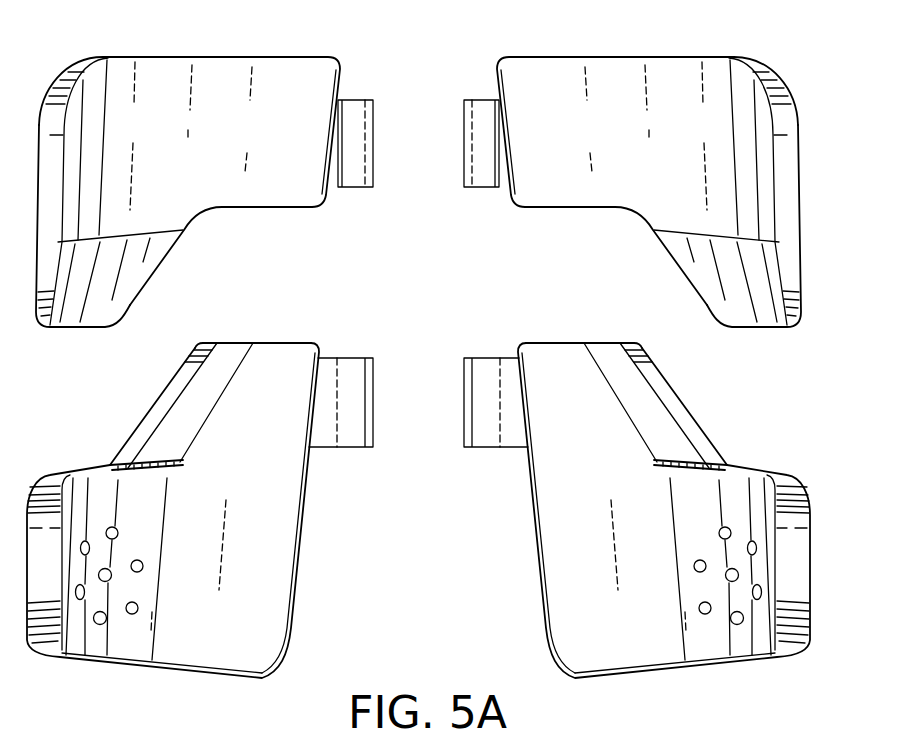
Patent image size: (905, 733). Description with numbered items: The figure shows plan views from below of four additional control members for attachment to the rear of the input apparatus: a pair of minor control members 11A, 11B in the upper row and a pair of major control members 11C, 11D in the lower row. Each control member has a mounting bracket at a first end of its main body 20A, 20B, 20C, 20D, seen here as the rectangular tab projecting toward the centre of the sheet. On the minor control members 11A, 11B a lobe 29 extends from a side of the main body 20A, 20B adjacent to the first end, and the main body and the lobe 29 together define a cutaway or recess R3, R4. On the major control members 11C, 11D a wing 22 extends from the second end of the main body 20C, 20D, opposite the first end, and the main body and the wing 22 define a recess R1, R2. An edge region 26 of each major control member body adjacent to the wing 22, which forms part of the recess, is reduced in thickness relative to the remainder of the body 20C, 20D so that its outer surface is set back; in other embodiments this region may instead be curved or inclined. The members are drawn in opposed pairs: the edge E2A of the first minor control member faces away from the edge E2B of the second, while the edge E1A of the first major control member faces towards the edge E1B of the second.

The minor control member 11A is at (116, 80).
The minor control member 11B is at (729, 76).
The major control member 11C is at (323, 565).
The major control member 11D is at (768, 454).
The main body 20A is at (296, 143).
The main body 20B is at (603, 137).
The main body 20C is at (258, 620).
The main body 20D is at (656, 620).
The wing 22 is at (493, 720).
The edge region 26 is at (228, 362).
The lobe 29 is at (133, 268).
The edge E1A is at (277, 343).
The edge E1B is at (537, 343).
The edge E2A is at (291, 208).
The edge E2B is at (546, 208).
The recess R1 is at (745, 407).
The recess R2 is at (93, 437).
The recess R3 is at (256, 252).
The recess R4 is at (590, 241).